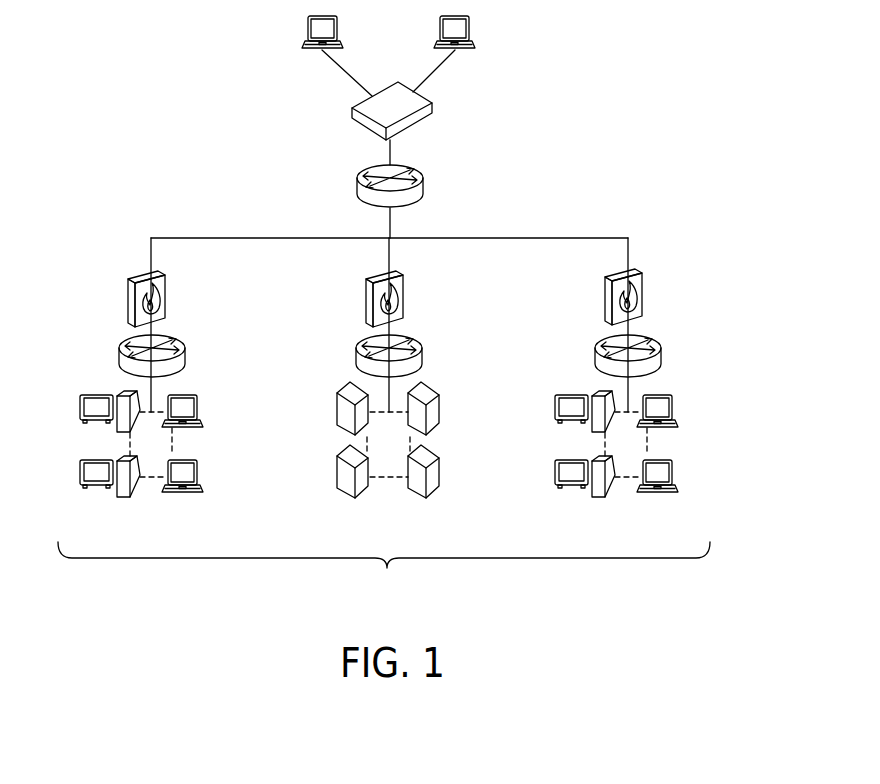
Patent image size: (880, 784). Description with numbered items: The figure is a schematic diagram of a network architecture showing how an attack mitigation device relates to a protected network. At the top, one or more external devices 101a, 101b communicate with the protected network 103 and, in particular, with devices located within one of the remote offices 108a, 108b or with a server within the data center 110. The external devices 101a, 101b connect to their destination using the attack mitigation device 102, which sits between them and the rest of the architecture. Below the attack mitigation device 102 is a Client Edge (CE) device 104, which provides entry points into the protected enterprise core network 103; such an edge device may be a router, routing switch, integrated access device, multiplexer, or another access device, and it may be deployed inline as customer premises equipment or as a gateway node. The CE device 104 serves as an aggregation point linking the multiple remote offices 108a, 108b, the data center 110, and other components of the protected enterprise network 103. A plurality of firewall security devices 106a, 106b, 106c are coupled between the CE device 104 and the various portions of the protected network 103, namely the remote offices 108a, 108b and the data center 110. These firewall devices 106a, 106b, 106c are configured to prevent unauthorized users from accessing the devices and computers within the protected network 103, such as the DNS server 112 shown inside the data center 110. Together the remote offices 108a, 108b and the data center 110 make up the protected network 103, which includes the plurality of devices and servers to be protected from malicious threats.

The external device 101a is at (305, 33).
The external device 101b is at (475, 33).
The attack mitigation device 102 is at (425, 113).
The protected network 103 is at (405, 411).
The Client Edge (CE) device 104 is at (358, 190).
The firewall security device 106a is at (165, 291).
The firewall security device 106b is at (403, 292).
The firewall security device 106c is at (641, 292).
The remote office 108a is at (80, 324).
The remote office 108b is at (699, 409).
The data center 110 is at (389, 453).
The DNS server 112 is at (336, 399).